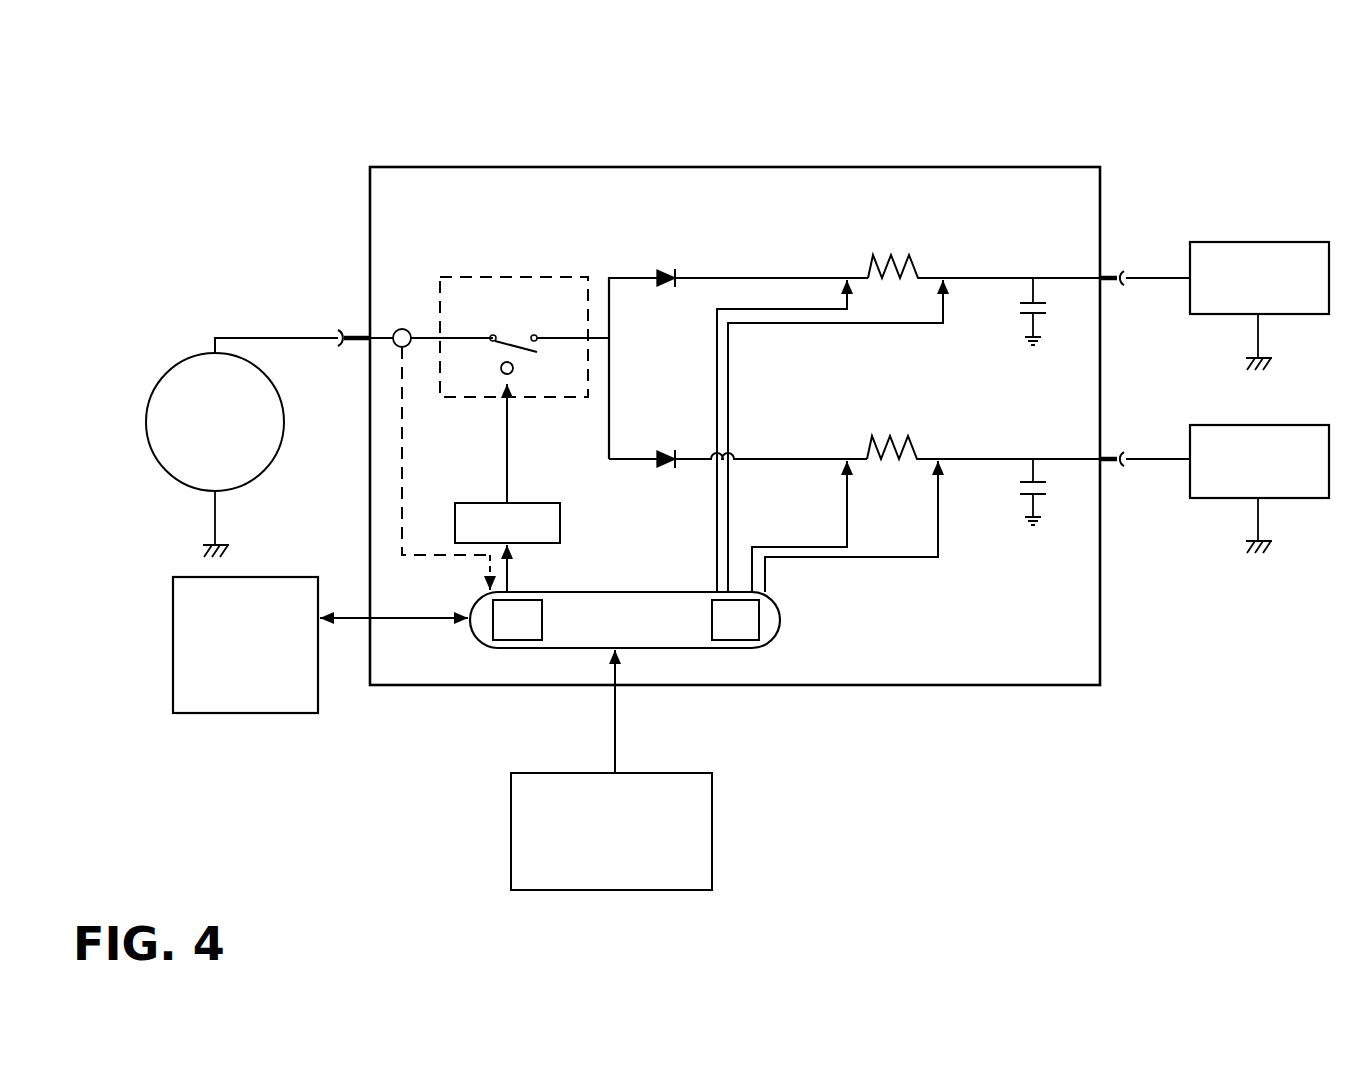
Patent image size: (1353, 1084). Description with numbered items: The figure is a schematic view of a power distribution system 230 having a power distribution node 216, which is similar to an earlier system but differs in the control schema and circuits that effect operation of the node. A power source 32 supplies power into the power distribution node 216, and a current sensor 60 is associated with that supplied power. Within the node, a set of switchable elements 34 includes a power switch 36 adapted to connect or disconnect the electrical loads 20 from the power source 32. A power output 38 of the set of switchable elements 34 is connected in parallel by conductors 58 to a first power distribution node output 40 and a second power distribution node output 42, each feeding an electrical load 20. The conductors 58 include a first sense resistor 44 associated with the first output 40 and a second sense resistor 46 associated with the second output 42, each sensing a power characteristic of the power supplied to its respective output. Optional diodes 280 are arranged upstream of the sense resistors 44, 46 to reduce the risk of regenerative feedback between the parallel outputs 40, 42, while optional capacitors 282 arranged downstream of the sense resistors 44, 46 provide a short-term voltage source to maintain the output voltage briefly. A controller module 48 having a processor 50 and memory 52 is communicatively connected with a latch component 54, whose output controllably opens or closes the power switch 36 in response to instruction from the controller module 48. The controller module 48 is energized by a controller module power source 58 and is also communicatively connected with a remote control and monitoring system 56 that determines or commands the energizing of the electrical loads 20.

The power distribution system 230 is at (652, 70).
The power distribution node 216 is at (1002, 163).
The power source 32 is at (232, 438).
The current sensor 60 is at (402, 328).
The set of switchable elements 34 is at (497, 291).
The power switch 36 is at (517, 343).
The power output 38 is at (598, 323).
The diodes 280 is at (665, 266).
The conductors / controller module power source 58 is at (740, 258).
The first sense resistor 44 is at (900, 238).
The second sense resistor 46 is at (900, 420).
The capacitors 282 is at (1012, 308).
The first power distribution node output 40 is at (1115, 258).
The second power distribution node output 42 is at (1110, 442).
The electrical load 20 is at (1284, 292).
The latch component 54 is at (524, 536).
The controller module 48 is at (706, 464).
The processor 50 is at (534, 634).
The memory 52 is at (752, 634).
The remote control and monitoring system 56 is at (264, 702).